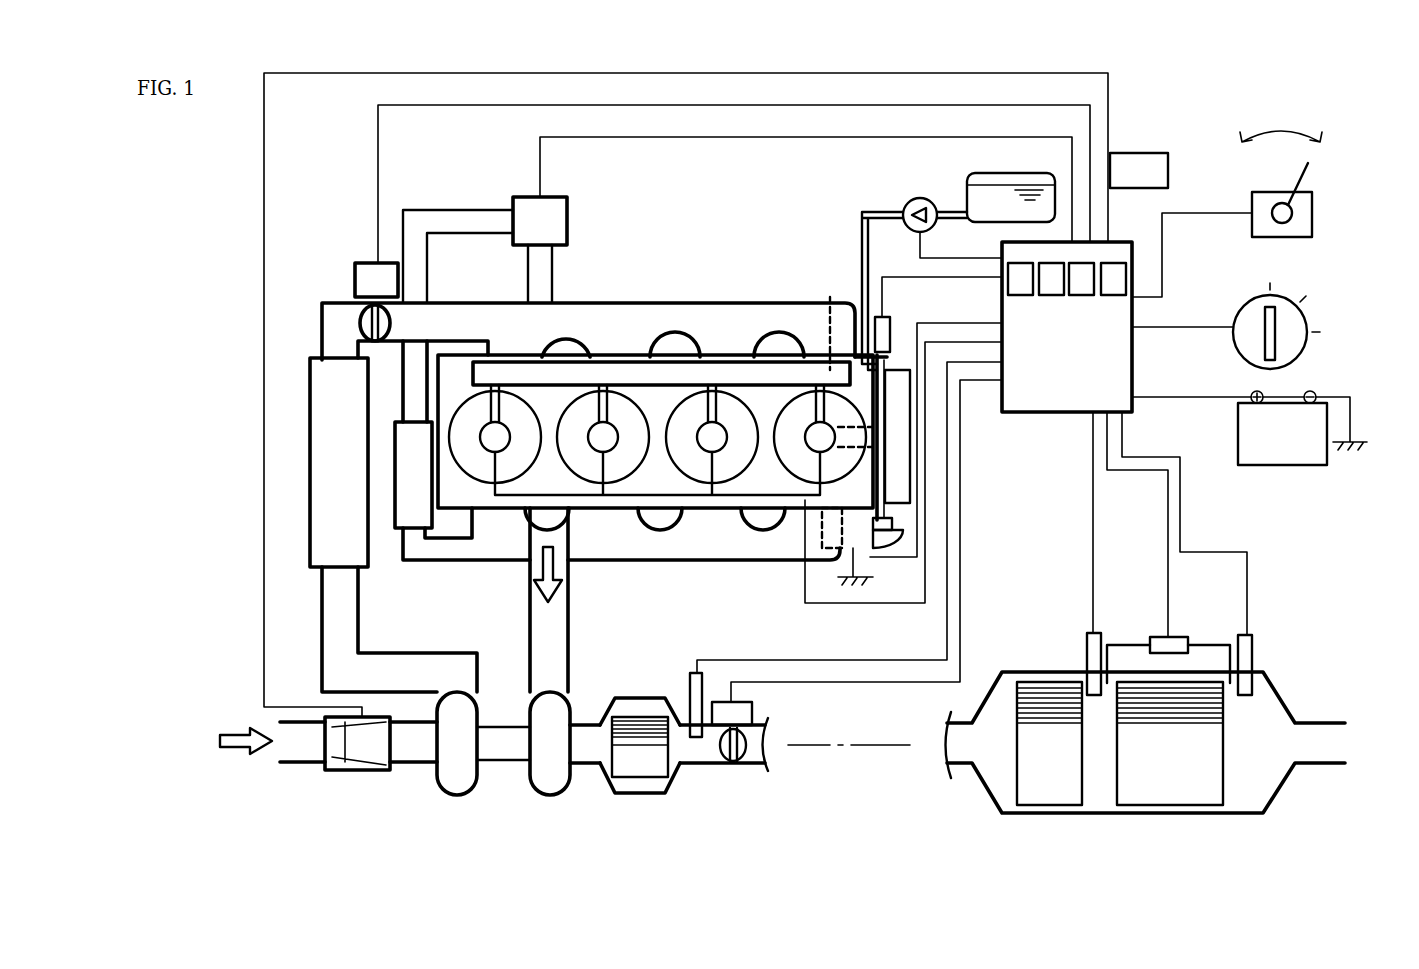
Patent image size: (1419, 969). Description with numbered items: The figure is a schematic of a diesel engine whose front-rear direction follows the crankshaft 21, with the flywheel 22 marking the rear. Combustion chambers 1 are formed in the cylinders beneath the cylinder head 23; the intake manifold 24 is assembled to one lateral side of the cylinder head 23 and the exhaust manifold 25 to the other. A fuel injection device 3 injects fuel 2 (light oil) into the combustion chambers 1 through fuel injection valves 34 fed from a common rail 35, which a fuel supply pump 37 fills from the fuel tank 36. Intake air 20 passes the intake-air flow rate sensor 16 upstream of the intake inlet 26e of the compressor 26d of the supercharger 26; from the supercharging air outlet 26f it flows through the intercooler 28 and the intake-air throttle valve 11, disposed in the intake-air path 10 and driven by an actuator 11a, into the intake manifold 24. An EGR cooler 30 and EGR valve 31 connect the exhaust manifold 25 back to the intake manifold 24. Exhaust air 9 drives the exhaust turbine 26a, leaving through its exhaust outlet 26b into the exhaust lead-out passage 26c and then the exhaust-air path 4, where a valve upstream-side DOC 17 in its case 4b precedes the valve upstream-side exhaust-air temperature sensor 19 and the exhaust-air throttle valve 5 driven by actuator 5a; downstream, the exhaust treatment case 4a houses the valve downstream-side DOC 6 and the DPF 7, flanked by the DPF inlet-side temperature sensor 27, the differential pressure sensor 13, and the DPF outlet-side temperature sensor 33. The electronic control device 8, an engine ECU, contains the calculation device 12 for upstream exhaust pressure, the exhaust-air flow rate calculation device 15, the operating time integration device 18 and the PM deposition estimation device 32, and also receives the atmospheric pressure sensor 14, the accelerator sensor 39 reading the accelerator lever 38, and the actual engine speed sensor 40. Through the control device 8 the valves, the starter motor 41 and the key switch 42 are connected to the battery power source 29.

The combustion chamber 1 is at (503, 468).
The fuel 2 is at (995, 215).
The fuel injection device 3 is at (711, 355).
The exhaust-air path 4 is at (755, 760).
The exhaust treatment case 4a is at (1108, 813).
The valve upstream-side DOC case 4b is at (665, 793).
The exhaust-air throttle valve 5 is at (745, 765).
The actuator 5a is at (752, 712).
The valve downstream-side DOC 6 is at (1050, 793).
The DPF 7 is at (1207, 802).
The electronic control device 8 is at (1050, 428).
The exhaust air 9 is at (545, 590).
The intake-air path 10 is at (316, 358).
The intake-air throttle valve 11 is at (365, 305).
The actuator 11a is at (370, 265).
The calculation device for valve upstream-side exhaust-air pressure 12 is at (1018, 296).
The differential pressure sensor 13 is at (1158, 637).
The atmospheric pressure sensor 14 is at (1140, 168).
The calculation device for exhaust-air flow rate 15 is at (1050, 296).
The intake-air flow rate sensor 16 is at (345, 770).
The valve upstream-side DOC 17 is at (648, 770).
The operating time integration device 18 is at (1080, 296).
The valve upstream-side exhaust-air temperature sensor 19 is at (690, 700).
The intake air 20 is at (234, 755).
The crankshaft 21 is at (848, 405).
The flywheel 22 is at (897, 380).
The cylinder head 23 is at (777, 347).
The intake manifold 24 is at (683, 300).
The exhaust manifold 25 is at (670, 570).
The supercharger 26 is at (511, 769).
The exhaust turbine 26a is at (551, 783).
The exhaust outlet 26b is at (565, 748).
The exhaust lead-out passage 26c is at (579, 770).
The compressor 26d is at (460, 793).
The intake inlet 26e is at (437, 735).
The supercharging air outlet 26f is at (483, 673).
The DPF inlet-side exhaust-air temperature sensor 27 is at (1090, 635).
The intercooler 28 is at (320, 405).
The power source 29 is at (1283, 450).
The EGR cooler 30 is at (425, 518).
The EGR valve 31 is at (525, 213).
The PM deposition amount estimation value calculation device 32 is at (1112, 296).
The DPF outlet-side exhaust-air temperature sensor 33 is at (1249, 636).
The fuel injection valve 34 is at (590, 425).
The common rail 35 is at (612, 370).
The fuel tank 36 is at (975, 180).
The fuel supply pump 37 is at (906, 207).
The accelerator lever 38 is at (1306, 178).
The accelerator sensor 39 is at (1305, 226).
The actual engine speed sensor 40 is at (882, 317).
The starter motor 41 is at (858, 540).
The key switch 42 is at (1242, 337).